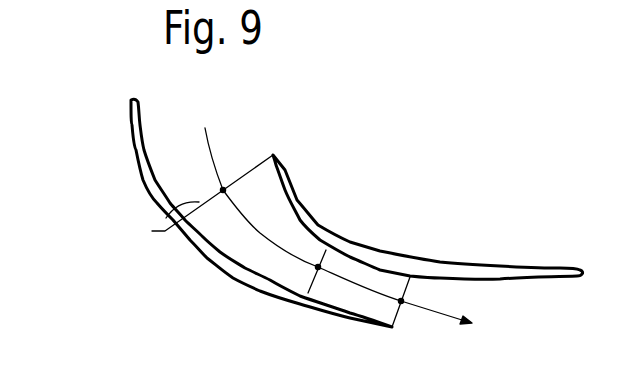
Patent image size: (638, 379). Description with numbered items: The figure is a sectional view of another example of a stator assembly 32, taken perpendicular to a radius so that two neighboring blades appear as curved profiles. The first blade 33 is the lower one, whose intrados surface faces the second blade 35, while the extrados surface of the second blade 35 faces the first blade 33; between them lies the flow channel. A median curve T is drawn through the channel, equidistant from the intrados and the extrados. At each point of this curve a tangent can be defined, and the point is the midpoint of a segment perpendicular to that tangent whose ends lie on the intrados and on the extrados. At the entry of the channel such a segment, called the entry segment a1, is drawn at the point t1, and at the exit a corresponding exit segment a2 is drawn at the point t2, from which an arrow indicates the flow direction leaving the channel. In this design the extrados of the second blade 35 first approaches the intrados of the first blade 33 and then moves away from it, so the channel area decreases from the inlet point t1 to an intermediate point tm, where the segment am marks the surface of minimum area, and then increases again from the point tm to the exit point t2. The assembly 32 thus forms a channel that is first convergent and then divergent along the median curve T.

The stator assembly 32 is at (402, 152).
The stator blade 33 is at (128, 129).
The stator blade 35 is at (437, 264).
The median curve T is at (206, 130).
The entry point t1 is at (223, 188).
The minimum-area point tm is at (322, 280).
The exit point t2 is at (411, 302).
The entry segment a1 is at (160, 220).
The minimum area segment am is at (308, 293).
The exit segment a2 is at (400, 308).